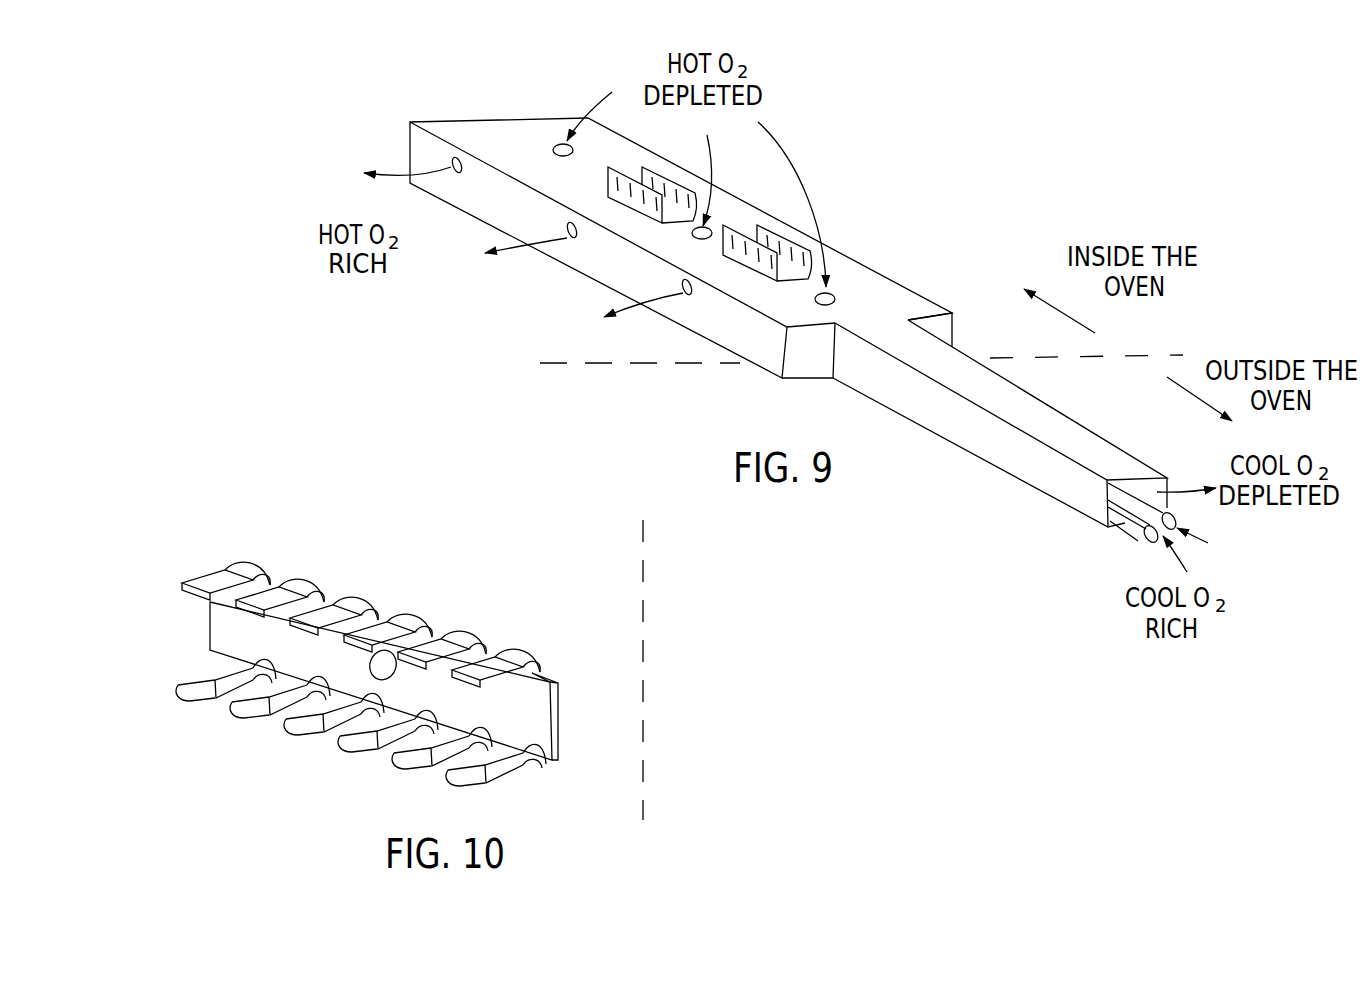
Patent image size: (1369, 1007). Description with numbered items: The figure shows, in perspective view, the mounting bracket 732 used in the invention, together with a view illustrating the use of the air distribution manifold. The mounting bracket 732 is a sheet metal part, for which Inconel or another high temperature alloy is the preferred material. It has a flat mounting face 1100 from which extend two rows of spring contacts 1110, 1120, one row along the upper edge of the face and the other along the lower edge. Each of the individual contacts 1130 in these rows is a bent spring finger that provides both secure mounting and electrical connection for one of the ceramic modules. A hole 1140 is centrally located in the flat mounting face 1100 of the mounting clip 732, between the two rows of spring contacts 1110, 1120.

The mounting bracket 732 is at (578, 658).
The flat mounting face 1100 is at (543, 713).
The row of spring contacts 1110 is at (182, 546).
The row of spring contacts 1120 is at (166, 673).
The contact 1130 is at (236, 558).
The hole 1140 is at (380, 680).